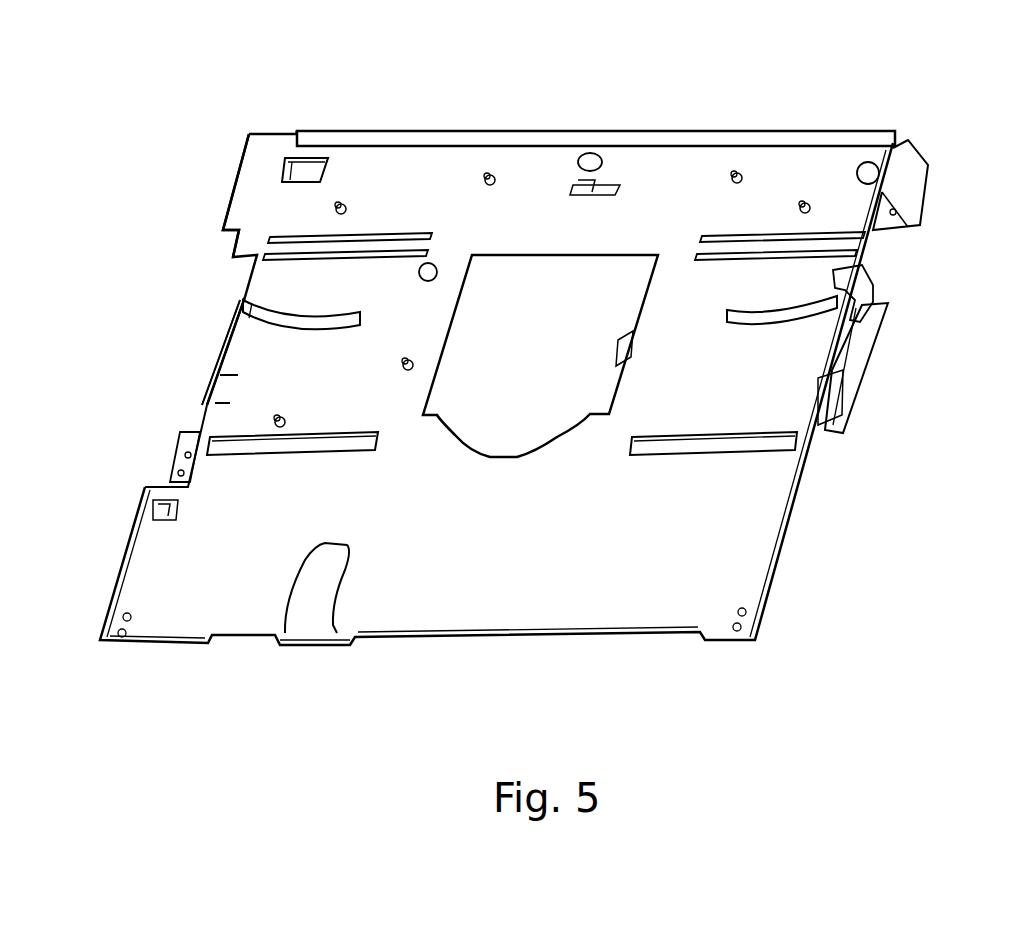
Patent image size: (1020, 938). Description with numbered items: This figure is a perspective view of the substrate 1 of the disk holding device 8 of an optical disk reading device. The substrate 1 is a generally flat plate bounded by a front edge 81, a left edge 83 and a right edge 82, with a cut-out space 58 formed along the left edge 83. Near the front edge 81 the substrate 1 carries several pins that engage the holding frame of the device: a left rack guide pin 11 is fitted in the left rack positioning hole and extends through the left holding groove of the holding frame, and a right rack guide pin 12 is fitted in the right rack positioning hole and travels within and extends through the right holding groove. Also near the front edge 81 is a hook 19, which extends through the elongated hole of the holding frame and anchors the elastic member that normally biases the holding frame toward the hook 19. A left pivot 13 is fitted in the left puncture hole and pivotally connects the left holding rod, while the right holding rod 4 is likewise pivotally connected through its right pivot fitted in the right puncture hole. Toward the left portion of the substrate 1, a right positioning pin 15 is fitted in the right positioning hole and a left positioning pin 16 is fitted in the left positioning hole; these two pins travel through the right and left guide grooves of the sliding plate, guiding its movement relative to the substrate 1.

The disk holding device 8 is at (106, 103).
The substrate 1 is at (434, 160).
The front edge 81 is at (578, 135).
The left edge 83 is at (240, 186).
The right edge 82 is at (863, 355).
The cut-out space 58 is at (212, 375).
The left pivot 13 is at (348, 207).
The left rack guide pin 11 is at (497, 185).
The hook 19 is at (602, 164).
The right rack guide pin 12 is at (742, 178).
The right holding rod 4 is at (808, 205).
The right positioning pin 15 is at (408, 360).
The left positioning pin 16 is at (285, 415).